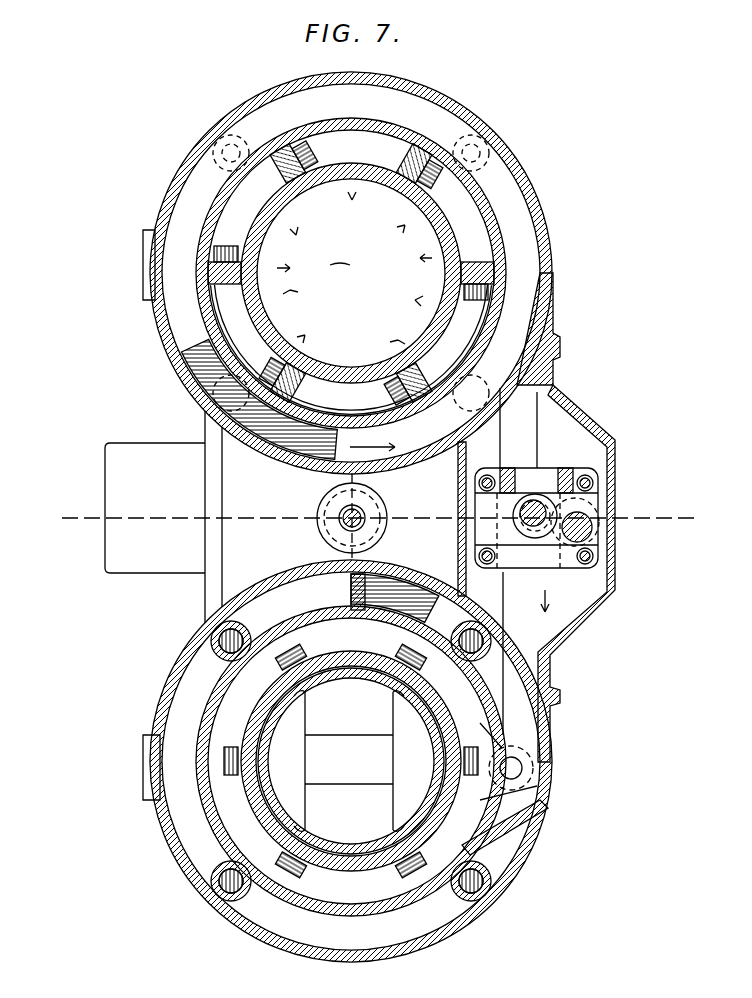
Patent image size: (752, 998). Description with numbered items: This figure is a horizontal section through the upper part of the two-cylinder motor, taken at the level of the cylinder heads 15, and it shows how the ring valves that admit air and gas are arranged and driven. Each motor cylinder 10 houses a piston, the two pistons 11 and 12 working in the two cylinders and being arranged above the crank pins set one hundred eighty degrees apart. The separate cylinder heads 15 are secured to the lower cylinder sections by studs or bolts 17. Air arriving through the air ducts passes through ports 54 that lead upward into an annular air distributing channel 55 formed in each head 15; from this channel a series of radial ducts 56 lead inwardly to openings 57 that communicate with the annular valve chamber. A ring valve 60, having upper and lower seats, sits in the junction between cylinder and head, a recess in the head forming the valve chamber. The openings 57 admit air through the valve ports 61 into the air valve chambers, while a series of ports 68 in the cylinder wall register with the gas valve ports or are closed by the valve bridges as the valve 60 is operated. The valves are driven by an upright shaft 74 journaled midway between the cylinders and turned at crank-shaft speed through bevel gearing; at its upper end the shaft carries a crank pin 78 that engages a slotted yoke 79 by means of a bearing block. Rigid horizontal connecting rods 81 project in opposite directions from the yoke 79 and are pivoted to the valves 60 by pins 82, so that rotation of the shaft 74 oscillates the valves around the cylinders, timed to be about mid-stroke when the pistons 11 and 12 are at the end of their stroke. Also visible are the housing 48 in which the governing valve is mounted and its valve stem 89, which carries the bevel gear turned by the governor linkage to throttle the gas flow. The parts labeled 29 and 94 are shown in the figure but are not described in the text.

The motor cylinder 10 is at (425, 208).
The piston 11 is at (440, 712).
The piston 12 is at (437, 745).
The cylinder head 15 is at (538, 196).
The studs or bolts 17 is at (492, 885).
The inlet connection 29 is at (155, 508).
The housing 48 is at (380, 502).
The ports 54 is at (298, 450).
The annular air distributing channel 55 is at (540, 258).
The radial ducts 56 is at (297, 129).
The openings 57 is at (296, 178).
The ring valve 60 is at (380, 908).
The valve ports 61 is at (312, 886).
The ports 68 is at (300, 857).
The upright shaft 74 is at (520, 515).
The crank pin 78 is at (585, 530).
The slotted yoke 79 is at (595, 483).
The connecting rods 81 is at (525, 432).
The pins 82 is at (522, 768).
The valve stem 89 is at (343, 522).
The sealing ring 94 is at (352, 122).